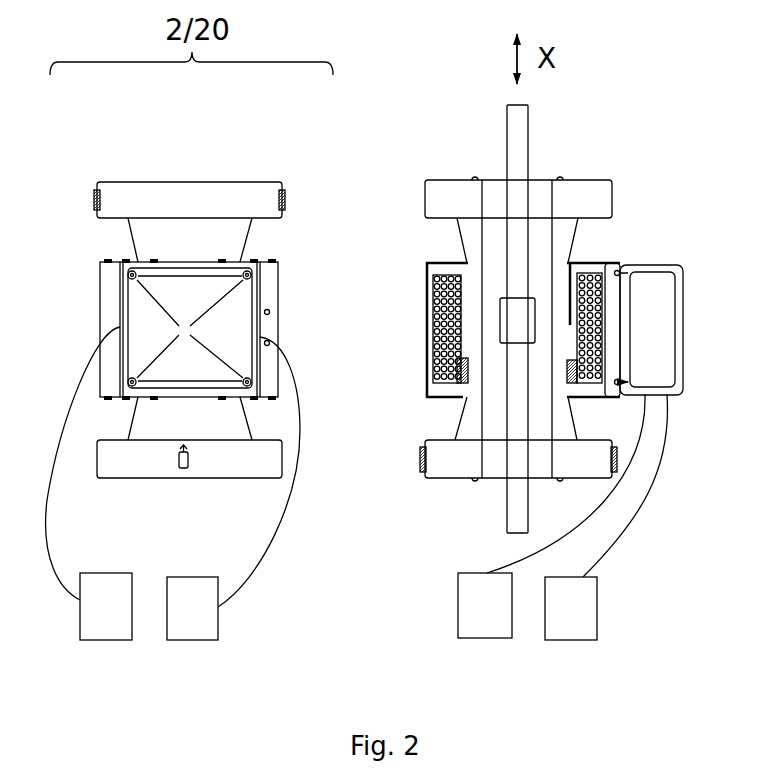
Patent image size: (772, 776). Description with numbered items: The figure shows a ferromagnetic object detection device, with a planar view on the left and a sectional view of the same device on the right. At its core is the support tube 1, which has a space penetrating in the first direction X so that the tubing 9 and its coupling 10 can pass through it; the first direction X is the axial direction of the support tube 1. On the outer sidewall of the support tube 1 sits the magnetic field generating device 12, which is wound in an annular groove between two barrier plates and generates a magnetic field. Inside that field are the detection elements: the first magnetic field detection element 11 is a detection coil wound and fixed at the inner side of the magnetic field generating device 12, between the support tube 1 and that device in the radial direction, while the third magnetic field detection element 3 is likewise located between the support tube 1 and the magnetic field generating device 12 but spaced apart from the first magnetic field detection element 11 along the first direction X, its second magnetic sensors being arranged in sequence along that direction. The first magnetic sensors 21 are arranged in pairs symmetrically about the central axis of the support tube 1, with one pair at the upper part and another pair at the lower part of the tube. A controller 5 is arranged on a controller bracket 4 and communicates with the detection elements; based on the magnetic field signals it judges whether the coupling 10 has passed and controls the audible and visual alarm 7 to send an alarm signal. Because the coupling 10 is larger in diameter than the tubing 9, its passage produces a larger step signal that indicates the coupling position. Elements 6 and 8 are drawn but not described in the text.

The support tube 1 is at (188, 180).
The third magnetic field detection element 3 is at (585, 262).
The controller bracket 4 is at (668, 258).
The controller 5 is at (647, 350).
The cables 6 is at (660, 495).
The audible and visual alarm 7 is at (573, 643).
The power supply unit 8 is at (490, 643).
The tubing 9 is at (503, 497).
The coupling 10 is at (497, 345).
The first magnetic field detection element 11 is at (450, 355).
The magnetic field generating device 12 is at (428, 265).
The first magnetic sensors 21 is at (93, 193).